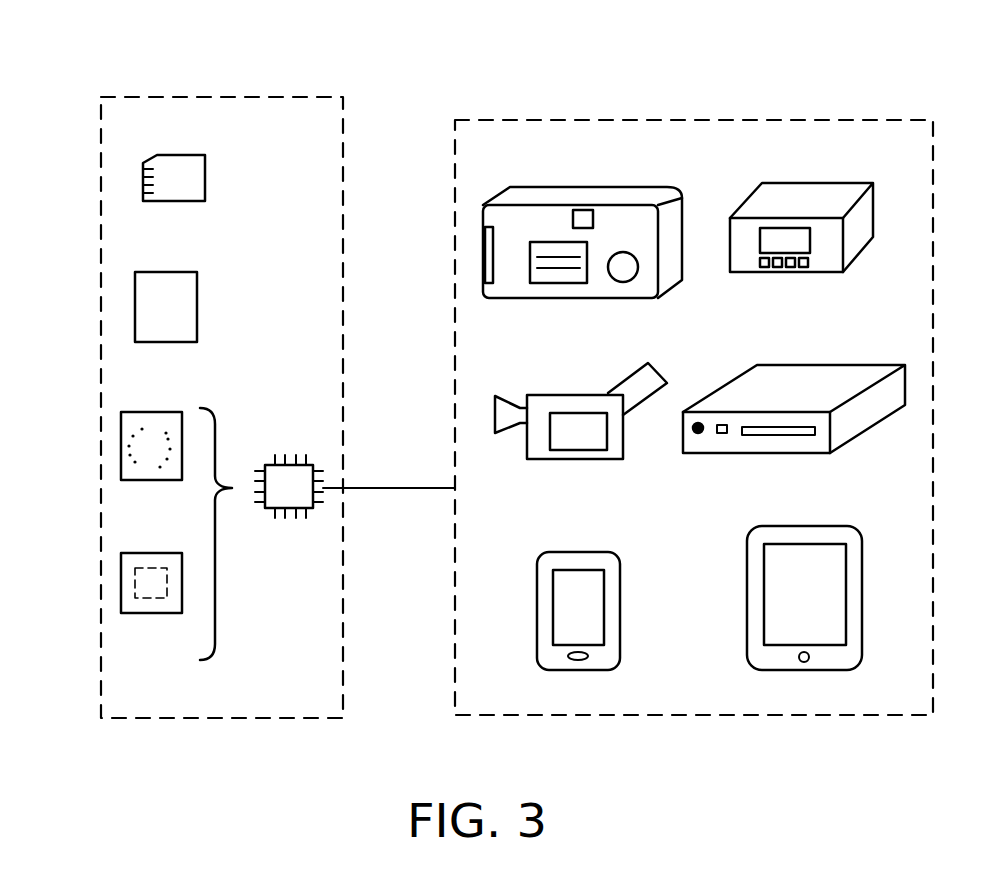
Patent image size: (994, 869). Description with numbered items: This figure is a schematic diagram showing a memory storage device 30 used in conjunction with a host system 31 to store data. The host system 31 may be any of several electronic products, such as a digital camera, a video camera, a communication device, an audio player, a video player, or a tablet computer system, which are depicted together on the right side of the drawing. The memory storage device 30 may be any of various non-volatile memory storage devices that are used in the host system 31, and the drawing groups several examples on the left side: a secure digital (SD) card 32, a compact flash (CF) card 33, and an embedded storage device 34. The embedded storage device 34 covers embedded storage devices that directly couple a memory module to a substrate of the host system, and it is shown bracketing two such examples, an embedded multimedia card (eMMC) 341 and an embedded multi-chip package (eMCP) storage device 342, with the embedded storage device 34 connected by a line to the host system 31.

The memory storage device 30 is at (210, 97).
The host system 31 is at (618, 120).
The secure digital (SD) card 32 is at (143, 184).
The compact flash (CF) card 33 is at (135, 310).
The embedded storage device 34 is at (292, 464).
The embedded multimedia card (eMMC) 341 is at (121, 447).
The embedded multi-chip package (eMCP) storage device 342 is at (121, 583).